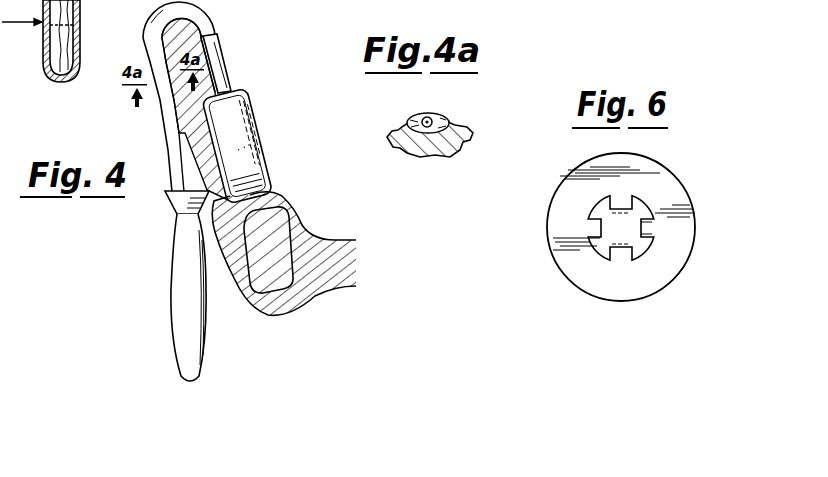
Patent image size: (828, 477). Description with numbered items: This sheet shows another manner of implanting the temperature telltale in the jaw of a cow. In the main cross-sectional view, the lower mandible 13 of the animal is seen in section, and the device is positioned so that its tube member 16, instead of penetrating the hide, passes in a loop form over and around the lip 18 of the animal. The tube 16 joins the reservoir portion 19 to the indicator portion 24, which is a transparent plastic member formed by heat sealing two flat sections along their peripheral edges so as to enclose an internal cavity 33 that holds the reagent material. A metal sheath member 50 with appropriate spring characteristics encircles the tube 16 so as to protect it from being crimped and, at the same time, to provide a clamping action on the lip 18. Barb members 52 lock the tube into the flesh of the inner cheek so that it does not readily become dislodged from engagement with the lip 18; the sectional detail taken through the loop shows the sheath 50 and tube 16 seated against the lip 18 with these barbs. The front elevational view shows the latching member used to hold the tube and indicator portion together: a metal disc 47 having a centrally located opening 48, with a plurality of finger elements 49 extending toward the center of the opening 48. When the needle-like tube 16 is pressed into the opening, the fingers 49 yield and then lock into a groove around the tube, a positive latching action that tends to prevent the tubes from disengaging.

In FIG. 4, the lower mandible 13 is at (277, 294).
In FIG. 4, the tube 16 is at (222, 62).
In FIG. 4a, the tube 16 is at (428, 117).
In FIG. 4, the lip 18 is at (173, 34).
In FIG. 4a, the lip 18 is at (468, 130).
In FIG. 4, the reservoir portion 19 is at (257, 128).
In FIG. 4, the indicator portion 24 is at (166, 262).
In FIG. 4, the internal cavity 33 is at (77, 10).
In FIG. 6, the metal disc 47 is at (692, 262).
In FIG. 6, the opening 48 is at (640, 205).
In FIG. 6, the finger elements 49 is at (648, 234).
In FIG. 4, the metal sheath member 50 is at (202, 25).
In FIG. 4a, the metal sheath member 50 is at (412, 119).
In FIG. 4, the barb members 52 is at (208, 54).